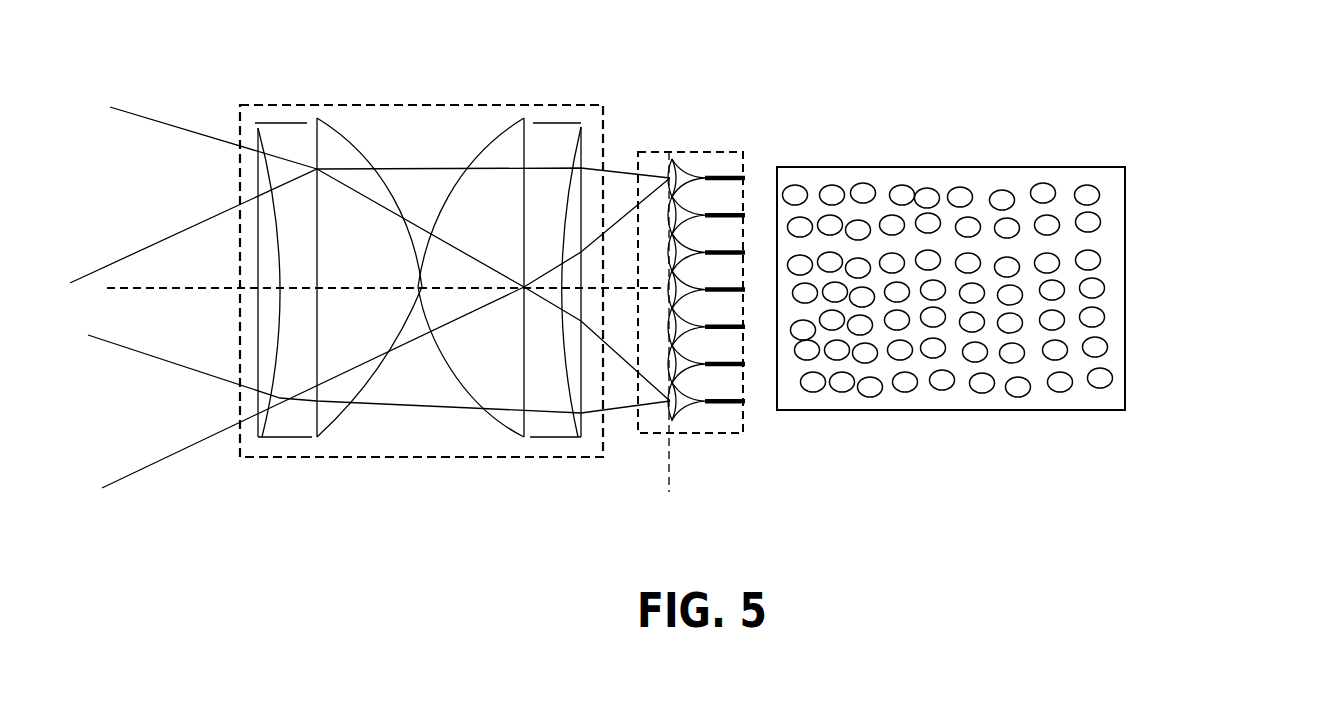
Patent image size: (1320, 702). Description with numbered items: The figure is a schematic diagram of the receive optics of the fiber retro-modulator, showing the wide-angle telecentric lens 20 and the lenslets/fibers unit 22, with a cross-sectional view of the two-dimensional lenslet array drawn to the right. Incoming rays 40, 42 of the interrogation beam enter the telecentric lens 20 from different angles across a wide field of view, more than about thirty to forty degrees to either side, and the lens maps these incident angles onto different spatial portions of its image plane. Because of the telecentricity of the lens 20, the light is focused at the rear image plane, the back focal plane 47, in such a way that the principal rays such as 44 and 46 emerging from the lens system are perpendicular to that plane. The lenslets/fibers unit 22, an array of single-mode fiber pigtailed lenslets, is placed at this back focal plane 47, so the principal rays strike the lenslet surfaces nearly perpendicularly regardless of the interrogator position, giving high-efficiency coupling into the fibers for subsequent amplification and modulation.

The wide-angle telecentric lens 20 is at (368, 103).
The lenslets/fibers unit 22 is at (708, 152).
The light ray 40 is at (160, 112).
The light ray 42 is at (140, 484).
The principal ray 44 is at (605, 168).
The principal ray 46 is at (620, 413).
The back focal plane 47 is at (672, 470).